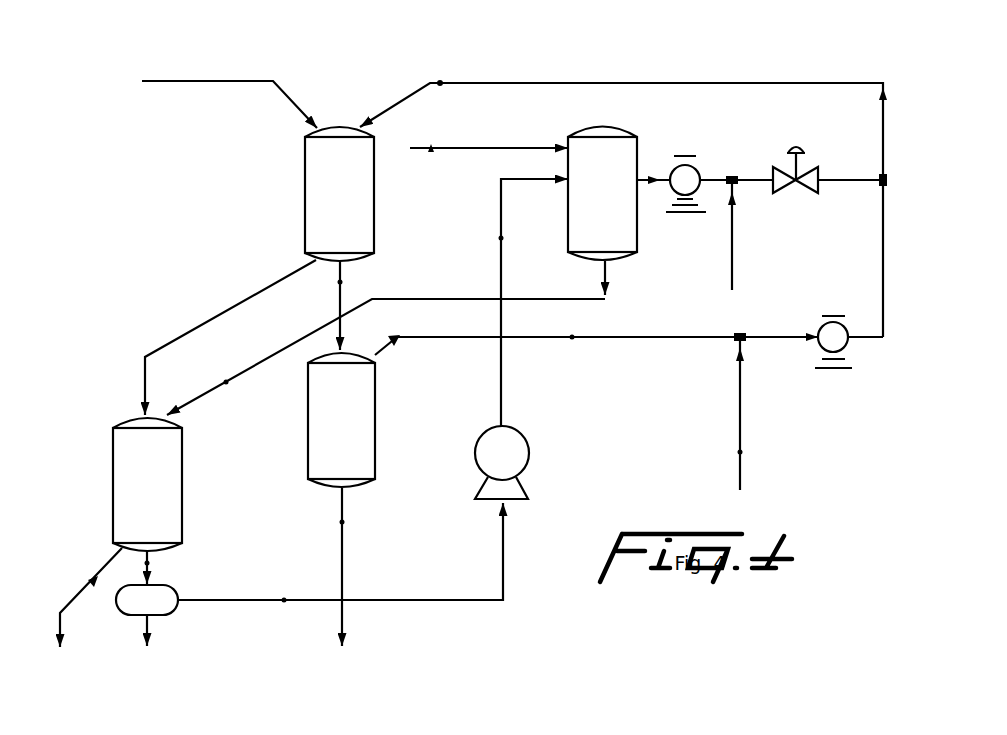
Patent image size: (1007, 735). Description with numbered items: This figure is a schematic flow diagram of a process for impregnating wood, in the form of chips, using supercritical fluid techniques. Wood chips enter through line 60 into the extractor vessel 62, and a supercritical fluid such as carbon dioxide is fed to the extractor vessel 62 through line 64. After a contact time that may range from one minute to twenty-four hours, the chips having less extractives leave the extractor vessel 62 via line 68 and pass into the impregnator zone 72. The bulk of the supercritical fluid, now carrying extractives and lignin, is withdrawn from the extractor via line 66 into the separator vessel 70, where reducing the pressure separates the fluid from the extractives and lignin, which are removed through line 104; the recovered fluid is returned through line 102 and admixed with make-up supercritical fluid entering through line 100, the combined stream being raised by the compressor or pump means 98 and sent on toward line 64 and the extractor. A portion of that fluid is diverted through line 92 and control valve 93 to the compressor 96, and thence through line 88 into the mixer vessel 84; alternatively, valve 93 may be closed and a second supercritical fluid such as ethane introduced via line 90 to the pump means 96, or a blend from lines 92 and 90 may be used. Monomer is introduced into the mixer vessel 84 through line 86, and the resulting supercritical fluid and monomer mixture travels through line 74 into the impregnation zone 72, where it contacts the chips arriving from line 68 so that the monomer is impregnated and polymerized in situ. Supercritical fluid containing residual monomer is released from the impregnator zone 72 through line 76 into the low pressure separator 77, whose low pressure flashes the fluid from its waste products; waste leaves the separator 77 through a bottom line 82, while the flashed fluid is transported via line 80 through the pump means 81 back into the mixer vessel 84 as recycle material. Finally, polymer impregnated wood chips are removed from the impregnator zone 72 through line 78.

The line 60 is at (295, 93).
The extractor vessel 62 is at (312, 201).
The line 64 is at (440, 83).
The line 66 is at (343, 282).
The line 68 is at (213, 322).
The separator vessel 70 is at (365, 414).
The impregnator zone 72 is at (170, 468).
The line 74 is at (228, 382).
The line 76 is at (150, 563).
The low pressure separator 77 is at (165, 590).
The line 78 is at (93, 578).
The line 80 is at (284, 600).
The pump means 81 is at (518, 448).
The outlet line 82 is at (150, 620).
The mixer vessel 84 is at (630, 230).
The line 86 is at (433, 150).
The line 88 is at (660, 178).
The line 90 is at (732, 270).
The line 92 is at (845, 178).
The control valve 93 is at (810, 190).
The compressor 96 is at (700, 165).
The compressor or pump means 98 is at (820, 350).
The line 100 is at (742, 452).
The line 102 is at (575, 337).
The line 104 is at (345, 522).